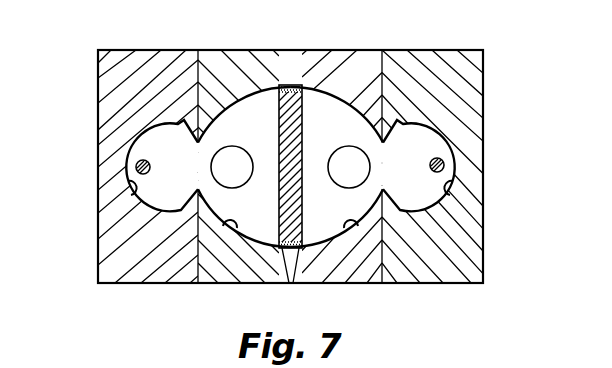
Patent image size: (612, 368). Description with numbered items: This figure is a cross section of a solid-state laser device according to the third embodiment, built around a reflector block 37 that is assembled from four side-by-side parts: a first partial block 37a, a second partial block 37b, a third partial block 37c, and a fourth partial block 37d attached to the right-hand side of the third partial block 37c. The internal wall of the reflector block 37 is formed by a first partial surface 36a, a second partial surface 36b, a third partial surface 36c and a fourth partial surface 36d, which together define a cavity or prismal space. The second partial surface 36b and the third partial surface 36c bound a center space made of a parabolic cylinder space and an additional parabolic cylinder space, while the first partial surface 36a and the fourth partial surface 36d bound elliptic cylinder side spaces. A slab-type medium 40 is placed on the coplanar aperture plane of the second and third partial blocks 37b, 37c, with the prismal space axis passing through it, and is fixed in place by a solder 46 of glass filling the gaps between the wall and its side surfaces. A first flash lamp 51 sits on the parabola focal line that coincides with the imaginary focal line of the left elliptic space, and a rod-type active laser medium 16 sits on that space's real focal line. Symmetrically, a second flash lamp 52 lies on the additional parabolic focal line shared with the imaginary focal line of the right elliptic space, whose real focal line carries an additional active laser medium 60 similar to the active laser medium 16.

The reflector block 37 is at (484, 88).
The first partial block 37a is at (152, 50).
The second partial block 37b is at (242, 50).
The third partial block 37c is at (345, 50).
The fourth partial block 37d is at (430, 50).
The first partial surface 36a is at (128, 190).
The second partial surface 36b is at (231, 223).
The third partial surface 36c is at (338, 233).
The fourth partial surface 36d is at (445, 196).
The slab-type medium 40 is at (303, 207).
The solder 46 is at (294, 284).
The first flash lamp 51 is at (243, 147).
The second flash lamp 52 is at (340, 147).
The active laser medium 16 is at (150, 163).
The additional active laser medium 60 is at (431, 161).